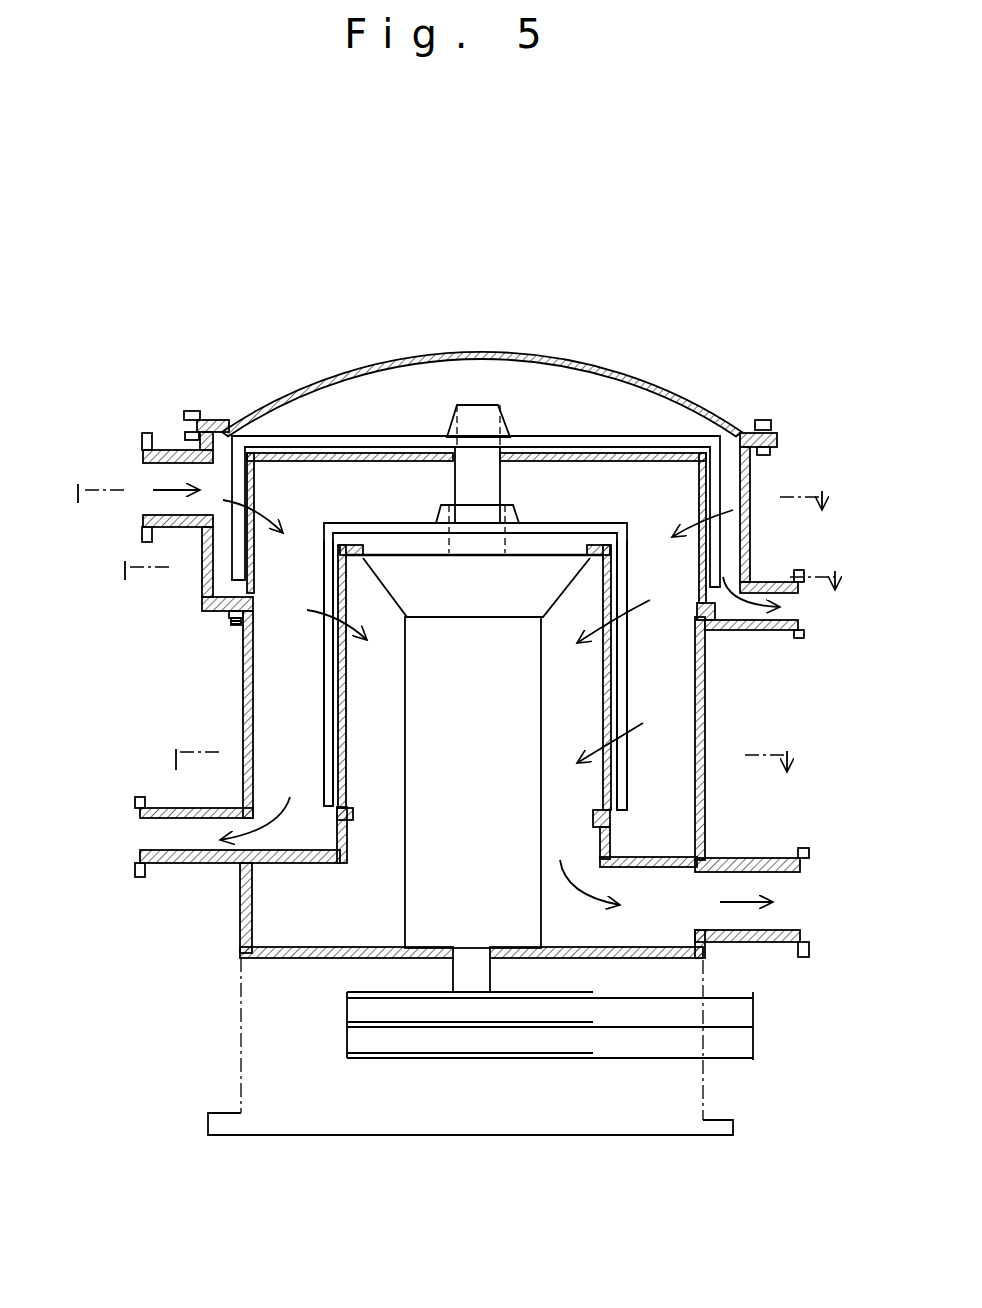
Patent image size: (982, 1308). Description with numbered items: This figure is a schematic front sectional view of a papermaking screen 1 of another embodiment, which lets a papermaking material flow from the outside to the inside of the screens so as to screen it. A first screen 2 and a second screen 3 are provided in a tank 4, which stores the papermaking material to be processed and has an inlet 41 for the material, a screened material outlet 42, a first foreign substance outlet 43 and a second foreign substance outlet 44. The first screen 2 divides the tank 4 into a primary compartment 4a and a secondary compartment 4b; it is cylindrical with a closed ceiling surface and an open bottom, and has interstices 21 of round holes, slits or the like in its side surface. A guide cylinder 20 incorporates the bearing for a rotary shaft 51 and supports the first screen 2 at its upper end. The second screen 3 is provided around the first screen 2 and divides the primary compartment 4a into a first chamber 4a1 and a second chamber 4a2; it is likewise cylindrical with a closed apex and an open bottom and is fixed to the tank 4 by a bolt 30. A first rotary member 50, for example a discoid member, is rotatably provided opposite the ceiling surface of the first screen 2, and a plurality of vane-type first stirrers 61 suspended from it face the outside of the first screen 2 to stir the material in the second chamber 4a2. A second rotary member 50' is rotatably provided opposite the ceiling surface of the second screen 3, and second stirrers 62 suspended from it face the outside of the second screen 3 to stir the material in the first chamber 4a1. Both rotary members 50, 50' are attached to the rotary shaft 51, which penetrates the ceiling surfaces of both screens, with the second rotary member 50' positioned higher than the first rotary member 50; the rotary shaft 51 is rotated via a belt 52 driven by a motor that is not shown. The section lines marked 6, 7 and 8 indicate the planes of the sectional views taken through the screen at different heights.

The papermaking screen 1 is at (455, 705).
The first screen 2 is at (340, 787).
The second screen 3 is at (254, 579).
The tank 4 is at (705, 697).
The primary compartment 4a is at (386, 427).
The first chamber 4a1 is at (212, 560).
The second chamber 4a2 is at (278, 657).
The secondary compartment 4b is at (353, 691).
The section line VI-VI 6 is at (444, 498).
The section line VII-VII 7 is at (479, 575).
The section line VIII-VIII 8 is at (477, 769).
The guide cylinder 20 is at (413, 903).
The interstices 21 is at (340, 724).
The bolt 30 is at (232, 626).
The inlet 41 is at (180, 470).
The screened material outlet 42 is at (767, 922).
The first foreign substance outlet 43 is at (790, 610).
The second foreign substance outlet 44 is at (187, 838).
The first rotary member 50 is at (495, 639).
The second rotary member 50' is at (476, 483).
The rotary shaft 51 is at (484, 488).
The belt 52 is at (720, 1047).
The first stirrers 61 is at (328, 668).
The second stirrers 62 is at (242, 477).